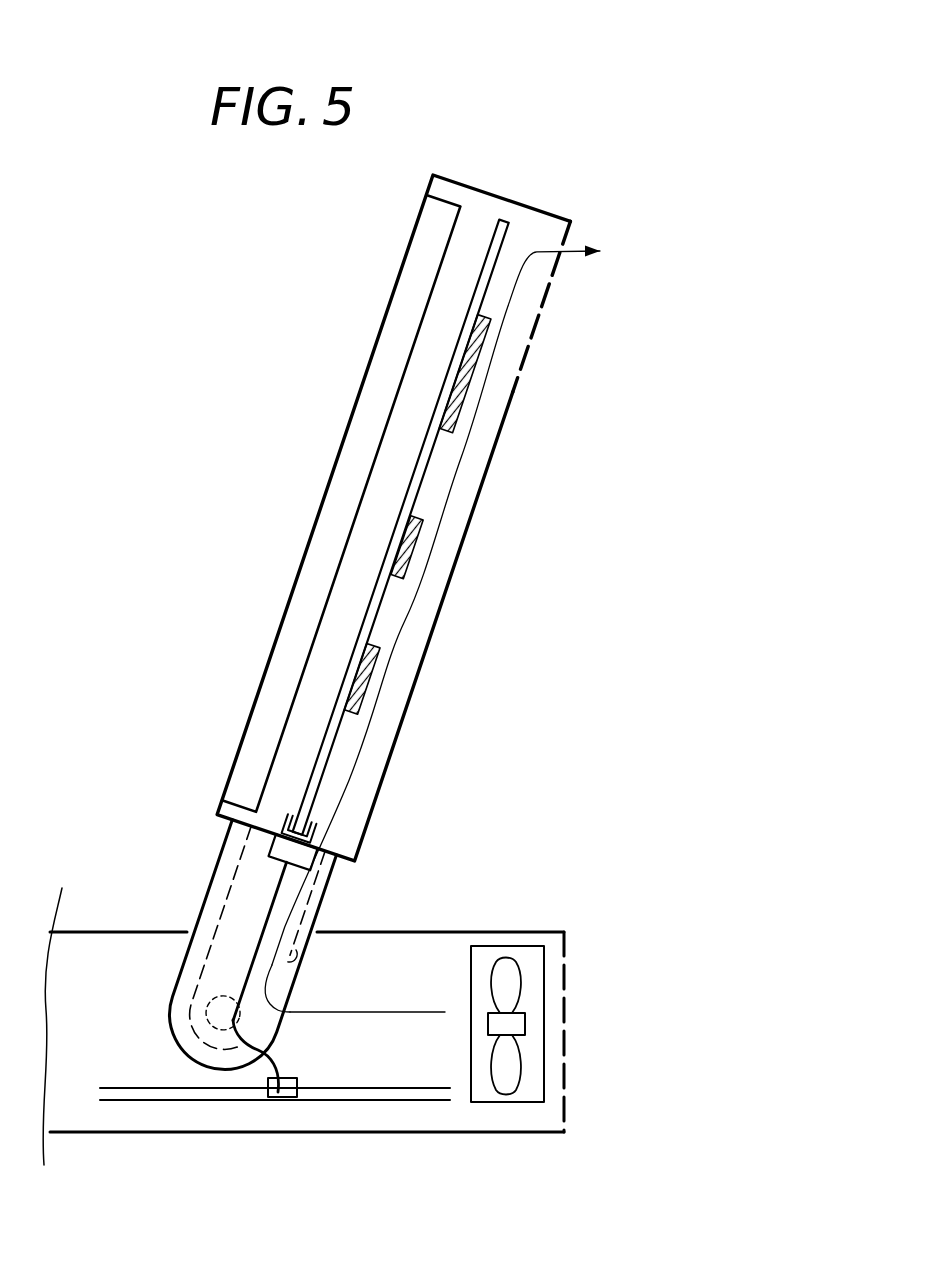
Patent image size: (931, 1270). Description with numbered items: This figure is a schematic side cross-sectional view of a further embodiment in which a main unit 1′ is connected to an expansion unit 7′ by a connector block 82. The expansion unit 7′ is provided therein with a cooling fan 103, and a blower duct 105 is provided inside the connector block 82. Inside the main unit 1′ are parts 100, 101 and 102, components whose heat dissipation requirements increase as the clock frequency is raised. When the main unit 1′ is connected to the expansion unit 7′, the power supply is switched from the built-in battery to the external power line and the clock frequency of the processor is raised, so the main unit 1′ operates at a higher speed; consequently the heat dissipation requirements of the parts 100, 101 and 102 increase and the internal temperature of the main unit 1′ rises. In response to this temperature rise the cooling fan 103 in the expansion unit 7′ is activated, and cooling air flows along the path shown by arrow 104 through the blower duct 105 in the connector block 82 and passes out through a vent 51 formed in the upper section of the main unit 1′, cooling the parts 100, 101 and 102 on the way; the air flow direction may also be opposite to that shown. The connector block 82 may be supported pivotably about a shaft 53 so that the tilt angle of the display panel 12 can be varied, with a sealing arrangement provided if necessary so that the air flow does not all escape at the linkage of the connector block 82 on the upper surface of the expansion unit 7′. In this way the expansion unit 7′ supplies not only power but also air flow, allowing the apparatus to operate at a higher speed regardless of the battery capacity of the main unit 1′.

The main unit 1′ is at (537, 207).
The display panel 12 is at (410, 236).
The vent 51 is at (555, 273).
The part 100 is at (463, 390).
The part 101 is at (407, 545).
The part 102 is at (360, 684).
The blower duct 105 is at (253, 877).
The connector block 82 is at (200, 913).
The shaft 53 is at (215, 1030).
The expansion unit 7′ is at (403, 932).
The arrow 104 is at (400, 1014).
The cooling fan 103 is at (498, 945).